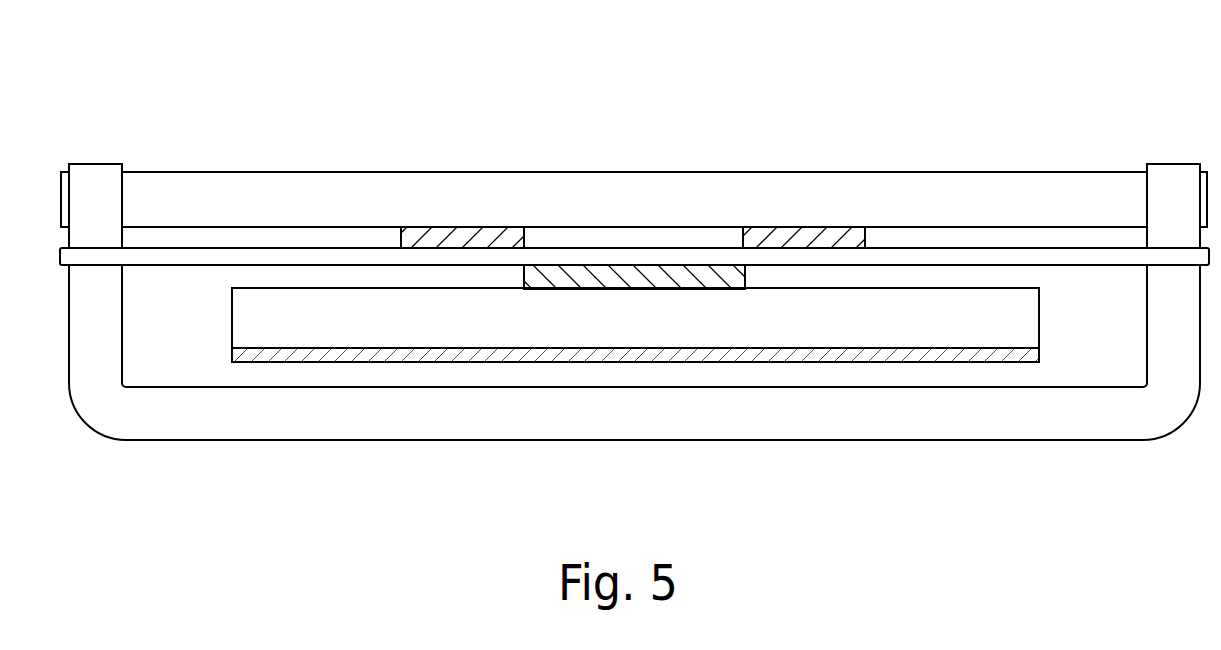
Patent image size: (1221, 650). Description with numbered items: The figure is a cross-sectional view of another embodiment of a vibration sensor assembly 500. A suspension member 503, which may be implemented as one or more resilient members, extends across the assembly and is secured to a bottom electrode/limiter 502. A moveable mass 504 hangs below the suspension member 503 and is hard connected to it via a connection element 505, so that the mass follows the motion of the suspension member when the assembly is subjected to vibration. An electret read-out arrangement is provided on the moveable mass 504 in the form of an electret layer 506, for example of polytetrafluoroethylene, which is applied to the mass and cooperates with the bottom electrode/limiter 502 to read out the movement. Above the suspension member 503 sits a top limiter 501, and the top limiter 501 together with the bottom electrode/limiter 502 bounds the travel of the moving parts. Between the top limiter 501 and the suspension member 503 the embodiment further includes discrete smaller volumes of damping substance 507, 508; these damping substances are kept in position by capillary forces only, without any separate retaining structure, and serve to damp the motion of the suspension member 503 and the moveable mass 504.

The vibration sensor assembly 500 is at (698, 98).
The top limiter 501 is at (203, 195).
The bottom electrode/limiter 502 is at (676, 413).
The suspension member 503 is at (303, 253).
The moveable mass 504 is at (372, 328).
The connection element 505 is at (675, 278).
The electret layer 506 is at (449, 353).
The discrete volume of damping substance 507 is at (463, 237).
The discrete volume of damping substance 508 is at (805, 237).